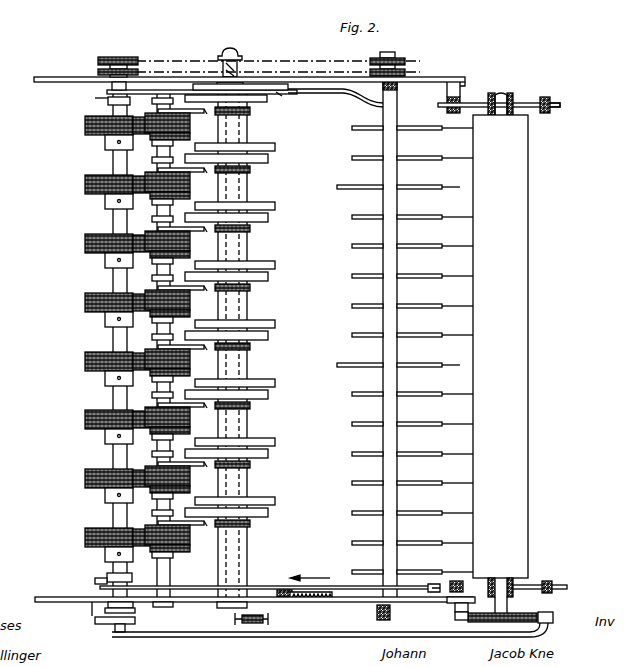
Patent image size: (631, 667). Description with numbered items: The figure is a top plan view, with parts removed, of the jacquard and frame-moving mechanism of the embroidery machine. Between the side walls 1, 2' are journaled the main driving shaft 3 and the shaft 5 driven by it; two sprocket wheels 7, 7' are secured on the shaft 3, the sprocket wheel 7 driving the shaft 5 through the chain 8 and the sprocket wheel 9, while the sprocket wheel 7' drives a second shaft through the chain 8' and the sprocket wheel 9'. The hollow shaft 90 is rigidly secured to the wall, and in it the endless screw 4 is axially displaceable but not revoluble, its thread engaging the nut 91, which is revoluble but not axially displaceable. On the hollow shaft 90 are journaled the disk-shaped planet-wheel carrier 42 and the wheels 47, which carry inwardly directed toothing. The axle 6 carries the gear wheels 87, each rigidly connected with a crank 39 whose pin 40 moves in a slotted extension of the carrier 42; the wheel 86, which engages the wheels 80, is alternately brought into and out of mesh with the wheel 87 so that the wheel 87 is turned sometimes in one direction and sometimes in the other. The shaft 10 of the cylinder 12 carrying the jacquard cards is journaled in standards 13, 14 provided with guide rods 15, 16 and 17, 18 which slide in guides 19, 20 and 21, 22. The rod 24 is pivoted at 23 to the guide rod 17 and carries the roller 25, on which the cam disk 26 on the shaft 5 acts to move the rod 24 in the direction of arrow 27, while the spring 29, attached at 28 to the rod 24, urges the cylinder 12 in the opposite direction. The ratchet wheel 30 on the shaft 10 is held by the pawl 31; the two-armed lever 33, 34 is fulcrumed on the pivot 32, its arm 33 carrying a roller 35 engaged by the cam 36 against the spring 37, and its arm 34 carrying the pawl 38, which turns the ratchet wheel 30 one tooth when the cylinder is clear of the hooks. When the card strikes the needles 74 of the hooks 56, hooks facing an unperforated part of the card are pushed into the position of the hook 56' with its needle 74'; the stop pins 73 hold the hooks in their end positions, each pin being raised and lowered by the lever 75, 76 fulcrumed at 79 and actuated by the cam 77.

The side wall 1 is at (272, 77).
The side wall 2' is at (254, 608).
The main driving shaft 3 is at (393, 56).
The endless screw 4 is at (238, 58).
The driven shaft 5 is at (113, 154).
The axle 6 is at (160, 153).
The sprocket wheel 7 is at (394, 71).
The sprocket wheel 7' is at (400, 55).
The chain 8 is at (260, 50).
The chain 8' is at (260, 57).
The sprocket wheel 9 is at (107, 75).
The sprocket wheel 9' is at (124, 53).
The cylinder shaft 10 is at (501, 93).
The cylinder 12 is at (522, 244).
The standard 13 is at (512, 96).
The standard 14 is at (513, 580).
The guide rod 15 is at (466, 103).
The guide rod 16 is at (558, 103).
The guide rod 17 is at (470, 603).
The guide rod 18 is at (567, 587).
The guide 19 is at (453, 97).
The guide 20 is at (546, 97).
The guide 21 is at (455, 592).
The guide 22 is at (549, 581).
The pivot 23 is at (432, 592).
The rod 24 is at (275, 586).
The roller 25 is at (95, 581).
The cam disk 26 is at (130, 578).
The arrow 27 is at (310, 566).
The spring attachment point 28 is at (285, 590).
The spring 29 is at (328, 598).
The ratchet wheel 30 is at (532, 612).
The pawl 31 is at (461, 620).
The pivot 32 is at (325, 610).
The lever arm 33 is at (203, 632).
The lever arm 34 is at (385, 632).
The roller 35 is at (130, 615).
The cam 36 is at (95, 621).
The spring 37 is at (255, 623).
The pawl 38 is at (553, 615).
The crank 39 is at (190, 120).
The crank pin 40 is at (190, 245).
The planet-wheel carrier 42 is at (268, 225).
The wheel 47 is at (275, 205).
The hook 56 is at (412, 350).
The displaced hook 56' is at (397, 276).
The stop pin 73 is at (396, 207).
The needle 74 is at (457, 427).
The needle 74' is at (450, 175).
The lever arm 75 is at (182, 90).
The lever arm 76 is at (302, 86).
The cam 77 is at (100, 100).
The fulcrum 79 is at (283, 94).
The gear wheel 80 is at (85, 127).
The spur wheel 86 is at (190, 298).
The gear wheel 87 is at (190, 190).
The hollow shaft 90 is at (248, 540).
The nut 91 is at (258, 100).